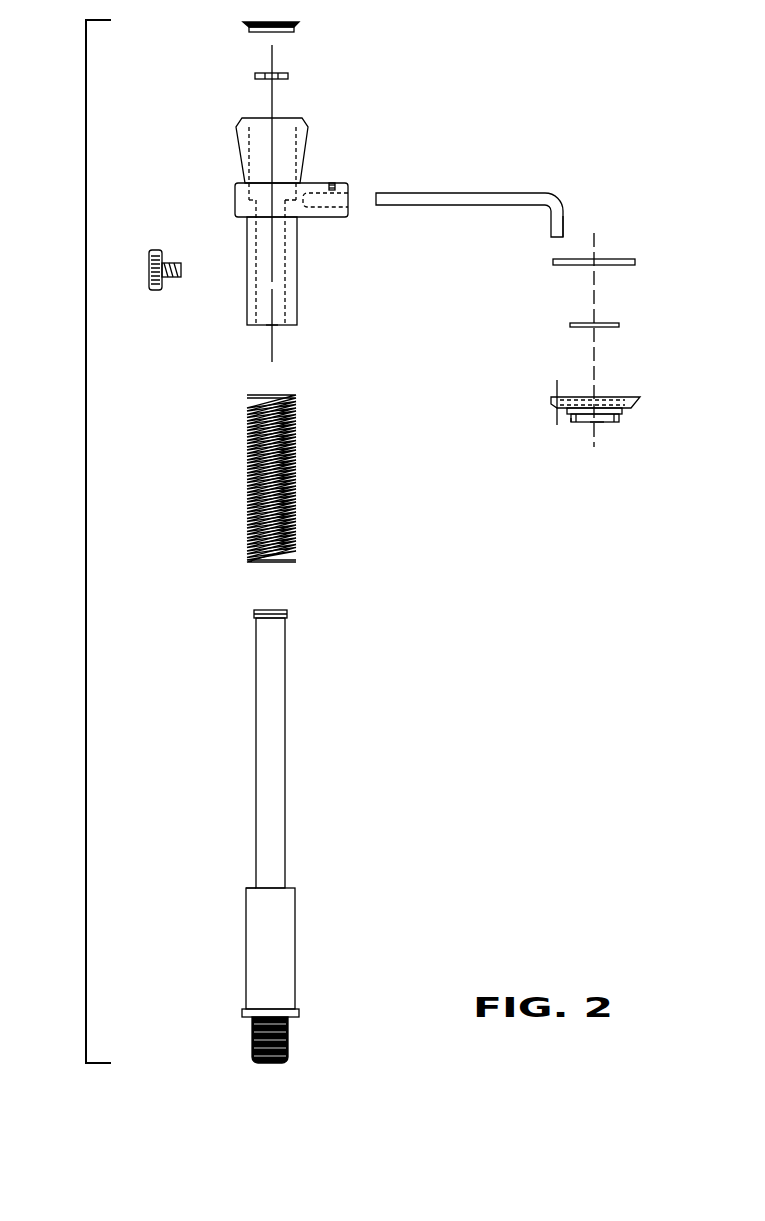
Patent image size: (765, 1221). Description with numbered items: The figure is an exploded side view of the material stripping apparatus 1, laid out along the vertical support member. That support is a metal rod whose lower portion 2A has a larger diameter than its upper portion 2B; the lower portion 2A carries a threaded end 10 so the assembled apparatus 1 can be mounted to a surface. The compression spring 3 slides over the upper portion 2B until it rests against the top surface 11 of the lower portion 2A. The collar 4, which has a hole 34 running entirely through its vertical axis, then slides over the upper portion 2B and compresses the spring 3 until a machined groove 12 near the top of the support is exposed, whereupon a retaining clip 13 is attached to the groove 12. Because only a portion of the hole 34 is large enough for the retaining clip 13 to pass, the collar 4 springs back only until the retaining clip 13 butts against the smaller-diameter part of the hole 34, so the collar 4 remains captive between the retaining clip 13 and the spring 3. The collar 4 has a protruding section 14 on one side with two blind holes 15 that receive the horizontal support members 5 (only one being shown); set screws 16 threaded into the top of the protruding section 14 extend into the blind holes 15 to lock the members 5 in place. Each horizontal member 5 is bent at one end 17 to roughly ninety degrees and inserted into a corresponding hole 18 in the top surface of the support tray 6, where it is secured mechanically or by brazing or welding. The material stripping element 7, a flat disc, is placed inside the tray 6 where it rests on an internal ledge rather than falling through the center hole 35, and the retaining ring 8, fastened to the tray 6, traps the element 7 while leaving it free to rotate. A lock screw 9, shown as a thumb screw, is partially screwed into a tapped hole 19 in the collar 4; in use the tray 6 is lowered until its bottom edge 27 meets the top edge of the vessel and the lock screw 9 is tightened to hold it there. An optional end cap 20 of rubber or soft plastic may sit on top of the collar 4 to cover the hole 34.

The apparatus 1 is at (82, 541).
The lower portion 2A is at (282, 946).
The upper portion 2B is at (277, 745).
The compression spring 3 is at (300, 480).
The collar 4 is at (240, 162).
The horizontal support member 5 is at (468, 192).
The support tray 6 is at (551, 402).
The material stripping element 7 is at (622, 325).
The retaining ring 8 is at (553, 262).
The lock screw 9 is at (155, 290).
The threaded end 10 is at (252, 1040).
The top surface 11 is at (245, 888).
The machined groove 12 is at (288, 614).
The retaining clip 13 is at (290, 76).
The protruding section 14 is at (325, 222).
The blind hole 15 is at (350, 195).
The set screw 16 is at (332, 180).
The bent end 17 is at (565, 218).
The hole 18 is at (557, 395).
The tapped hole 19 is at (250, 265).
The end cap 20 is at (300, 24).
The bottom edge 27 is at (570, 421).
The hole 34 is at (272, 325).
The center hole 35 is at (597, 421).